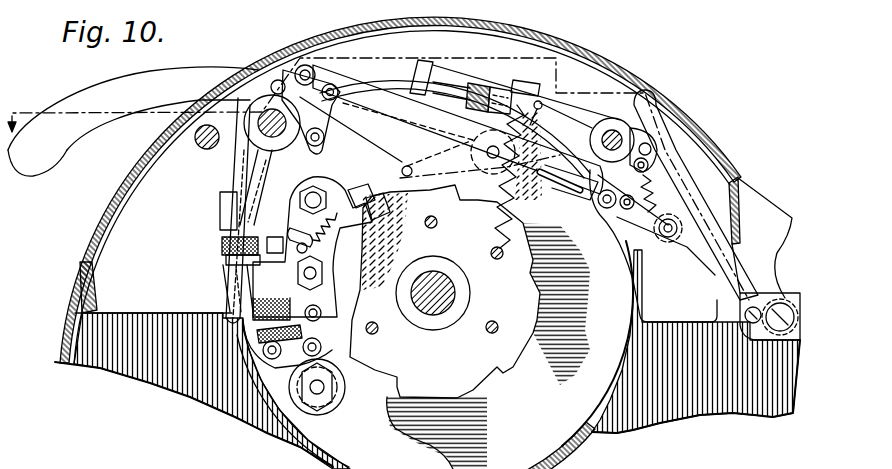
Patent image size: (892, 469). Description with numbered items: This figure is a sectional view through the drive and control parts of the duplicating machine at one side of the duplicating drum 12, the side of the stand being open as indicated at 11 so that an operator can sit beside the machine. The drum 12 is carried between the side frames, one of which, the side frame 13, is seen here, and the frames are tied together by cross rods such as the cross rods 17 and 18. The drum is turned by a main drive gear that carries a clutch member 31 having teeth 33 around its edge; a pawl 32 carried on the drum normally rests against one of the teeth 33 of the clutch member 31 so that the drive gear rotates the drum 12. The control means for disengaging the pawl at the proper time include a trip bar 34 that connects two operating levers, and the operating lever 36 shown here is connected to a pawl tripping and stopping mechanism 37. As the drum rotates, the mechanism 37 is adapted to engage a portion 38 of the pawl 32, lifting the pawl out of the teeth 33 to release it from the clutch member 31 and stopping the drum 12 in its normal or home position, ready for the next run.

The open side 11 is at (406, 179).
The duplicating drum 12 is at (626, 354).
The side frame 13 is at (692, 414).
The cross rod 17 is at (205, 149).
The cross rod 18 is at (612, 130).
The clutch member 31 is at (460, 398).
The pawl 32 is at (361, 190).
The teeth 33 is at (405, 178).
The trip bar 34 is at (769, 326).
The operating lever 36 is at (687, 257).
The pawl tripping and stopping mechanism 37 is at (578, 114).
The portion of the pawl 38 is at (232, 278).